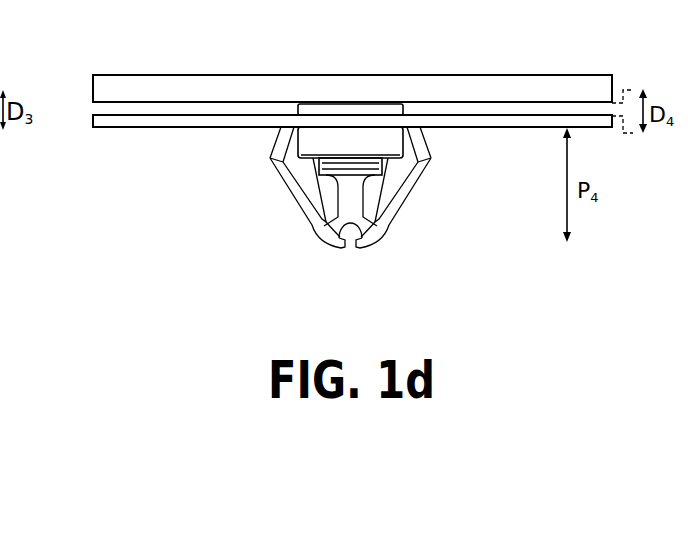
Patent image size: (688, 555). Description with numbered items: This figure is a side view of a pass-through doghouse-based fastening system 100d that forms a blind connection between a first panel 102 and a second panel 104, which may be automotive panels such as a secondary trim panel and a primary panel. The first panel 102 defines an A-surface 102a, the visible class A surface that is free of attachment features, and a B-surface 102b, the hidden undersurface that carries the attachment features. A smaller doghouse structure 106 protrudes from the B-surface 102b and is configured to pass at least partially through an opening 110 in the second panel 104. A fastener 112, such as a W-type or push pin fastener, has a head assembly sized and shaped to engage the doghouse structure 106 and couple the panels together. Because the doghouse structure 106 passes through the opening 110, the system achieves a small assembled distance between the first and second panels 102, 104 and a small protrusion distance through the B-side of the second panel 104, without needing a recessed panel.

The pass-through doghouse-based fastening system 100d is at (52, 69).
The first panel 102 is at (613, 83).
The A-surface 102a is at (175, 66).
The B-surface 102b is at (96, 104).
The second panel 104 is at (143, 127).
The doghouse structure 106 is at (313, 147).
The opening 110 is at (407, 128).
The fastener 112 is at (395, 202).